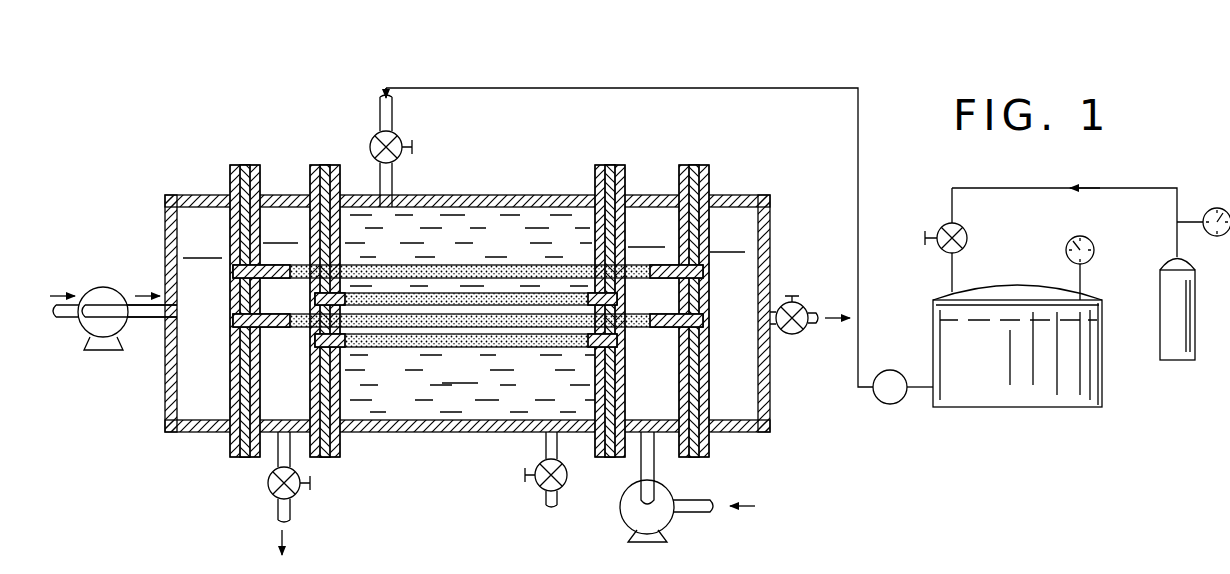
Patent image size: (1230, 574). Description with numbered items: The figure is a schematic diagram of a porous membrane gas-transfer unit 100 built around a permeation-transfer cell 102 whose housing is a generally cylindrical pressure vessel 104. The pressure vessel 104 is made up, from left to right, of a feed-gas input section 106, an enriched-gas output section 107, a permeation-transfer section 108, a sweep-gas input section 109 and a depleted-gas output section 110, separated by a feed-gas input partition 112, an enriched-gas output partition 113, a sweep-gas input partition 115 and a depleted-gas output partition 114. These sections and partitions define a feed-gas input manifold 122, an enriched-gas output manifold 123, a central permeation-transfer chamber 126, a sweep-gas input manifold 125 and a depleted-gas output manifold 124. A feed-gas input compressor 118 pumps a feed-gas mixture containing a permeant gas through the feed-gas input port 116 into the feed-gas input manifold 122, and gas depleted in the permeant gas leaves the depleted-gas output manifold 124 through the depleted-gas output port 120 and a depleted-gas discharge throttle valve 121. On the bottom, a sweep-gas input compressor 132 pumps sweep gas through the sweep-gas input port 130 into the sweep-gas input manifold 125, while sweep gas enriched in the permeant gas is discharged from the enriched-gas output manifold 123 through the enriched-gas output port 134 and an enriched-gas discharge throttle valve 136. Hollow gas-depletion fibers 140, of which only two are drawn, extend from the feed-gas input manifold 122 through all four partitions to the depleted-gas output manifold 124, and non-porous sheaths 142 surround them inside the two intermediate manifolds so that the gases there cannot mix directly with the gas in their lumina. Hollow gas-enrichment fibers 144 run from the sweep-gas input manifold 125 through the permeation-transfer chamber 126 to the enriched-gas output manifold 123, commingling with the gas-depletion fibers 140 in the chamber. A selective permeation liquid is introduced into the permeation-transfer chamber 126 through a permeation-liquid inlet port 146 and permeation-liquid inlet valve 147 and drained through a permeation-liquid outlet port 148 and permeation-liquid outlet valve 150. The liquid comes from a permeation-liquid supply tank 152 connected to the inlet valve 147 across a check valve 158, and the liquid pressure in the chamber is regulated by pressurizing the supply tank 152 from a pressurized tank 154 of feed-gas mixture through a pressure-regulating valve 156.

The gas-transfer unit 100 is at (459, 318).
The permeation-transfer cell 102 is at (198, 433).
The pressure vessel 104 is at (167, 380).
The feed-gas input section 106 is at (204, 195).
The enriched-gas output section 107 is at (288, 194).
The permeation-transfer section 108 is at (547, 195).
The sweep-gas input section 109 is at (655, 194).
The depleted-gas output section 110 is at (771, 241).
The feed-gas input partition 112 is at (240, 371).
The enriched-gas output partition 113 is at (320, 363).
The depleted-gas output partition 114 is at (700, 361).
The sweep-gas input partition 115 is at (640, 366).
The feed-gas input port 116 is at (179, 313).
The feed-gas input compressor 118 is at (107, 288).
The depleted-gas output port 120 is at (766, 318).
The depleted-gas discharge throttle valve 121 is at (798, 304).
The feed-gas input manifold 122 is at (208, 313).
The enriched-gas output manifold 123 is at (285, 237).
The depleted-gas output manifold 124 is at (728, 313).
The sweep-gas input manifold 125 is at (652, 237).
The permeation-transfer chamber 126 is at (470, 313).
The sweep-gas input port 130 is at (648, 420).
The sweep-gas input compressor 132 is at (620, 505).
The enriched-gas output port 134 is at (285, 419).
The enriched-gas discharge throttle valve 136 is at (270, 494).
The hollow gas-depletion fibers 140 is at (232, 266).
The non-porous sheaths 142 is at (297, 308).
The hollow gas-enrichment fibers 144 is at (405, 347).
The permeation-liquid inlet port 146 is at (393, 210).
The permeation-liquid inlet valve 147 is at (398, 140).
The permeation-liquid outlet port 148 is at (560, 400).
The permeation-liquid outlet valve 150 is at (535, 488).
The permeation-liquid supply tank 152 is at (1103, 385).
The pressurized tank of feed-gas mixture 154 is at (1160, 282).
The pressure-regulating valve 156 is at (963, 232).
The check valve 158 is at (886, 405).